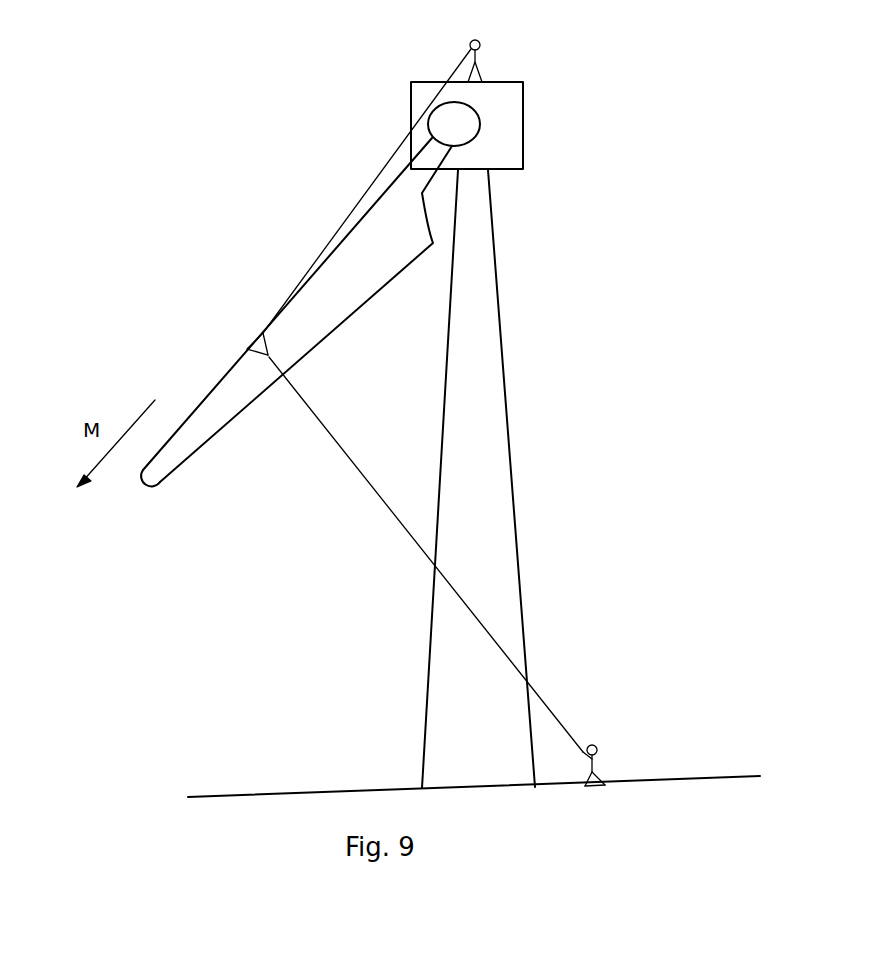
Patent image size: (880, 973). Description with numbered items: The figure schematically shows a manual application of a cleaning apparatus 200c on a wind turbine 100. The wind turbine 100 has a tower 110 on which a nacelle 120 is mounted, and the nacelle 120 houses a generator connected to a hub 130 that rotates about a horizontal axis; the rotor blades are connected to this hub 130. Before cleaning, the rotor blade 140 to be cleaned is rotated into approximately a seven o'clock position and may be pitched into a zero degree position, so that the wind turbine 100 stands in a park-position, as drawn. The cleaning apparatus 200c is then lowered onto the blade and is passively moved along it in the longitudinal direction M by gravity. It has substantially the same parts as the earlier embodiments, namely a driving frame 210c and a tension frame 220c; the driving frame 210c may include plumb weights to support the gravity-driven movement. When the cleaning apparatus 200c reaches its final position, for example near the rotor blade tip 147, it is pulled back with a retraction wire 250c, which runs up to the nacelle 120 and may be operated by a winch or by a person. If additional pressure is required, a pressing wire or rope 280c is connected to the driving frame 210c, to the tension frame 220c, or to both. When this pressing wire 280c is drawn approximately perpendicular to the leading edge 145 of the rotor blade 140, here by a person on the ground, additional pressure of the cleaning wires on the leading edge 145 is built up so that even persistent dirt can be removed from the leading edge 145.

The wind turbine 100 is at (652, 116).
The tower 110 is at (508, 427).
The nacelle 120 is at (523, 95).
The hub 130 is at (479, 133).
The rotor blade 140 is at (257, 342).
The leading edge 145 is at (207, 393).
The rotor blade tip 147 is at (142, 477).
The cleaning apparatus 200c is at (213, 285).
The driving frame 210c is at (247, 350).
The tension frame 220c is at (268, 338).
The retraction wire 250c is at (375, 182).
The pressing wire 280c is at (362, 480).